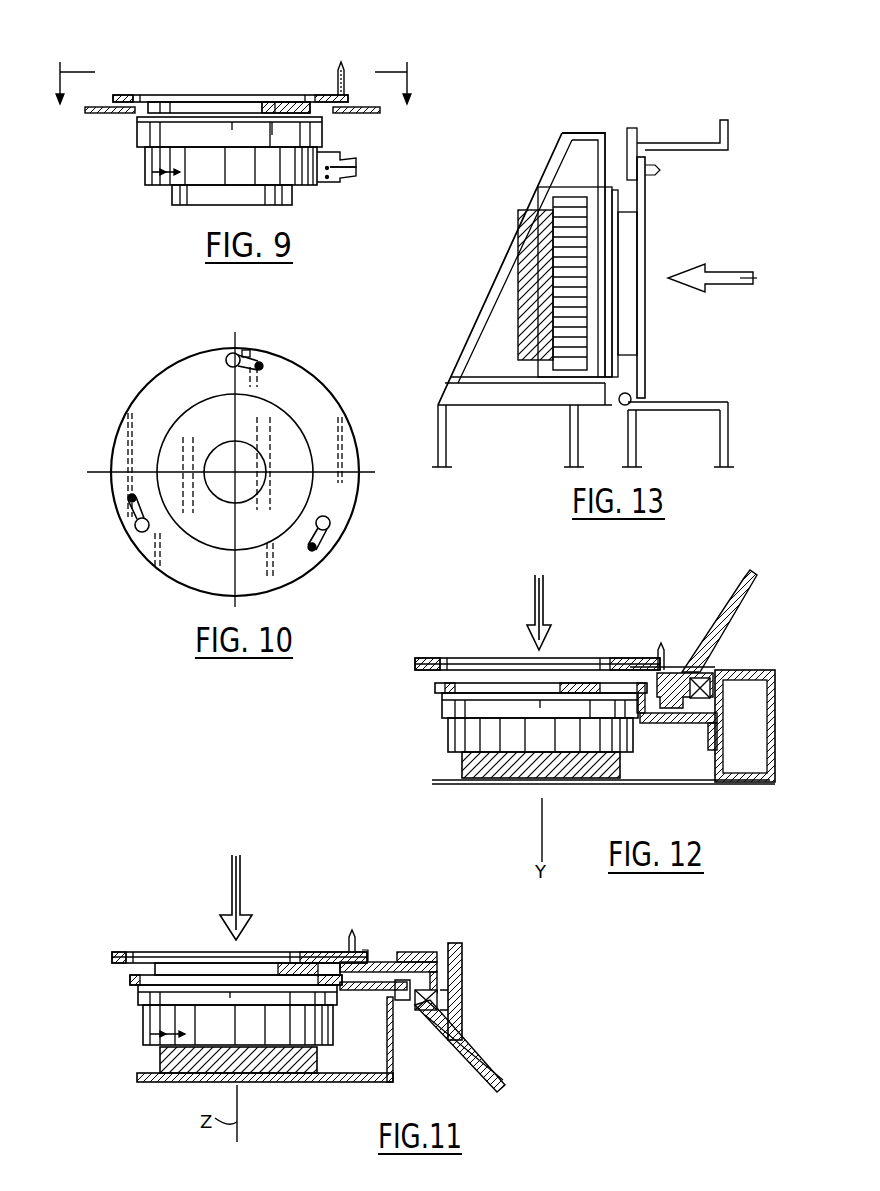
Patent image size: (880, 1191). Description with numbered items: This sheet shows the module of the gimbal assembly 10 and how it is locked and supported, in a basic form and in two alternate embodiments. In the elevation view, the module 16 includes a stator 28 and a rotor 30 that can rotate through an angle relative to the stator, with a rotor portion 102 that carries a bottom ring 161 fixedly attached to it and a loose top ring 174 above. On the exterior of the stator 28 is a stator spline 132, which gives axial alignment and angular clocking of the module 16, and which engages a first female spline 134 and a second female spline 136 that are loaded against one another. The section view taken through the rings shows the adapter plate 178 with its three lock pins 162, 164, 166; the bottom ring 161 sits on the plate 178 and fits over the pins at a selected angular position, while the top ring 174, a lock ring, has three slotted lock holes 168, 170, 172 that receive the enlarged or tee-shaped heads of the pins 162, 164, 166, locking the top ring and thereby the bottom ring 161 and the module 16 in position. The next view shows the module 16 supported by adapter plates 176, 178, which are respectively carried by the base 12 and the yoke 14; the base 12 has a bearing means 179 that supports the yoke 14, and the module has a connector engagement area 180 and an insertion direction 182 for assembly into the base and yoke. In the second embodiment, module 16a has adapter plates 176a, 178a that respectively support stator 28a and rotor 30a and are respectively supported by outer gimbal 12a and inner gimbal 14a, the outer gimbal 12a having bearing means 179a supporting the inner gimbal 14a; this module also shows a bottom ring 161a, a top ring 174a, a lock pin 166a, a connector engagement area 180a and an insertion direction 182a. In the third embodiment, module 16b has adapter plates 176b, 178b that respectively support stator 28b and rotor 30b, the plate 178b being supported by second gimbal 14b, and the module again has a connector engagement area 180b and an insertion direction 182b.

In FIG. 9, the gimbal assembly 10 is at (232, 96).
In FIG. 11, the base 12 is at (275, 1083).
In FIG. 12, the outer gimbal 12a is at (775, 700).
In FIG. 11, the yoke 14 is at (465, 1003).
In FIG. 12, the inner gimbal 14a is at (705, 668).
In FIG. 13, the second gimbal 14b is at (728, 450).
In FIG. 9, the module 16 is at (237, 107).
In FIG. 11, the module 16 is at (289, 979).
In FIG. 12, the module 16a is at (577, 691).
In FIG. 13, the module 16b is at (599, 293).
In FIG. 9, the stator 28 is at (145, 160).
In FIG. 11, the stator 28 is at (145, 1030).
In FIG. 12, the stator 28a is at (448, 745).
In FIG. 13, the stator 28b is at (563, 210).
In FIG. 11, the rotor 30 is at (120, 952).
In FIG. 12, the rotor 30a is at (480, 658).
In FIG. 13, the rotor 30b is at (645, 228).
In FIG. 9, the rotor portion 102 is at (283, 108).
In FIG. 9, the stator spline 132 is at (148, 175).
In FIG. 11, the stator spline 132 is at (150, 1037).
In FIG. 9, the first female spline 134 is at (330, 168).
In FIG. 9, the second female spline 136 is at (330, 177).
In FIG. 9, the bottom ring 161 is at (255, 102).
In FIG. 11, the bottom ring 161 is at (120, 963).
In FIG. 12, the bottom ring 161a is at (437, 688).
In FIG. 10, the lock pin 162 is at (130, 500).
In FIG. 10, the lock pin 164 is at (262, 366).
In FIG. 9, the lock pin 166 is at (348, 75).
In FIG. 10, the lock pin 166 is at (325, 550).
In FIG. 11, the lock pin 166 is at (352, 928).
In FIG. 12, the lock pin 166a is at (660, 650).
In FIG. 10, the lock hole 168 is at (137, 522).
In FIG. 10, the lock hole 170 is at (232, 353).
In FIG. 10, the lock hole 172 is at (330, 524).
In FIG. 9, the top ring 174 is at (203, 94).
In FIG. 10, the top ring 174 is at (322, 405).
In FIG. 11, the top ring 174 is at (162, 952).
In FIG. 12, the top ring 174a is at (430, 658).
In FIG. 11, the adapter plate 176 is at (375, 993).
In FIG. 12, the adapter plate 176a is at (694, 725).
In FIG. 13, the adapter plate 176b is at (612, 405).
In FIG. 9, the adapter plate 178 is at (362, 115).
In FIG. 11, the adapter plate 178 is at (385, 962).
In FIG. 12, the adapter plate 178a is at (678, 670).
In FIG. 13, the adapter plate 178b is at (635, 401).
In FIG. 11, the bearing means 179 is at (430, 1014).
In FIG. 12, the bearing means 179a is at (715, 690).
In FIG. 11, the connector engagement area 180 is at (320, 1060).
In FIG. 12, the connector engagement area 180a is at (590, 778).
In FIG. 13, the connector engagement area 180b is at (526, 330).
In FIG. 11, the insertion direction 182 is at (222, 905).
In FIG. 12, the insertion direction 182a is at (524, 618).
In FIG. 13, the insertion direction 182b is at (712, 268).